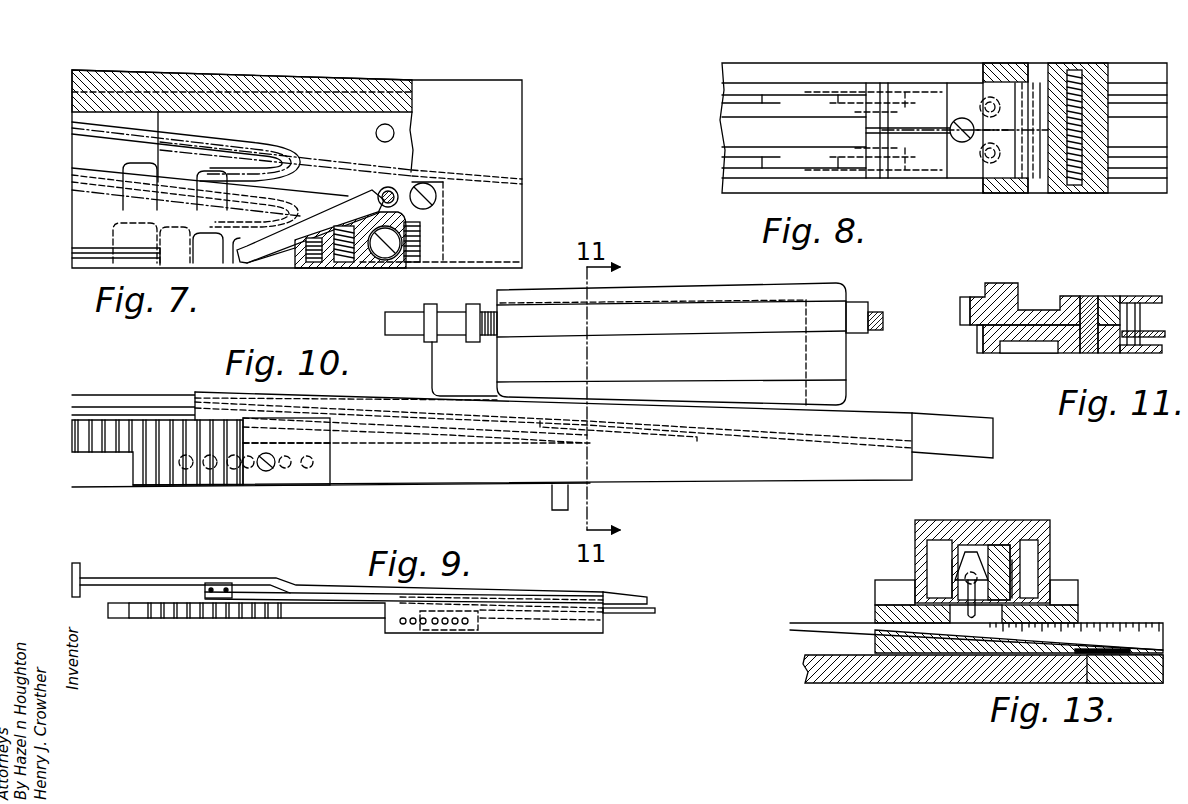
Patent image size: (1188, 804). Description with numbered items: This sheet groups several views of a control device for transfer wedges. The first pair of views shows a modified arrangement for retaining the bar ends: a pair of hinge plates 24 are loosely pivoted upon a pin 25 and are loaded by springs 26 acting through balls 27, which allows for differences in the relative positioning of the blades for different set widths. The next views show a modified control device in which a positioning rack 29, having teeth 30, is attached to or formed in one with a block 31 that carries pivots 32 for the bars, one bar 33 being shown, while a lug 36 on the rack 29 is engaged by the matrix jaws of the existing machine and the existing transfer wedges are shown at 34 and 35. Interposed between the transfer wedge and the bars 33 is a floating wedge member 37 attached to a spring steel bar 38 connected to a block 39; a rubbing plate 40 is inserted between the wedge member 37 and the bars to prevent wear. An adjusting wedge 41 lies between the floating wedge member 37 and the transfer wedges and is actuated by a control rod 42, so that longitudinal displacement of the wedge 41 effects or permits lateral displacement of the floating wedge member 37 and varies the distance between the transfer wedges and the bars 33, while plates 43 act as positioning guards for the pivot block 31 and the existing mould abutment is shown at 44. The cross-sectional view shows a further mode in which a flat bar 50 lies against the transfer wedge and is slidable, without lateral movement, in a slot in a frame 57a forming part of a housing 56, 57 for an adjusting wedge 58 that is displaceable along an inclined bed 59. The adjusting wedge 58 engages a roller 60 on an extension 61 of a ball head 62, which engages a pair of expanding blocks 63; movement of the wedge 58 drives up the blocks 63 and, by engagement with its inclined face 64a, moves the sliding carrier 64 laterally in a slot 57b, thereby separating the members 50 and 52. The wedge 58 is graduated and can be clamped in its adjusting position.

In FIG. 7, the hinge plates 24 is at (247, 259).
In FIG. 8, the hinge plates 24 is at (895, 142).
In FIG. 7, the pin 25 is at (383, 189).
In FIG. 8, the pin 25 is at (1030, 188).
In FIG. 7, the springs 26 is at (345, 263).
In FIG. 8, the springs 26 is at (990, 166).
In FIG. 7, the balls 27 is at (323, 263).
In FIG. 10, the positioning rack 29 is at (82, 446).
In FIG. 9, the positioning rack 29 is at (170, 610).
In FIG. 9, the teeth 30 is at (268, 610).
In FIG. 10, the block 31 is at (178, 470).
In FIG. 9, the block 31 is at (393, 633).
In FIG. 10, the pivots 32 is at (267, 471).
In FIG. 9, the pivots 32 is at (420, 625).
In FIG. 10, the bar 33 is at (432, 470).
In FIG. 9, the bar 33 is at (537, 620).
In FIG. 10, the transfer wedge 34 is at (702, 296).
In FIG. 11, the transfer wedge 34 is at (1002, 290).
In FIG. 10, the transfer wedge 35 is at (443, 368).
In FIG. 11, the transfer wedge 35 is at (1040, 347).
In FIG. 9, the lug 36 is at (138, 610).
In FIG. 10, the floating wedge member 37 is at (700, 440).
In FIG. 11, the floating wedge member 37 is at (1108, 352).
In FIG. 9, the floating wedge member 37 is at (587, 608).
In FIG. 10, the spring steel bar 38 is at (110, 406).
In FIG. 9, the spring steel bar 38 is at (263, 592).
In FIG. 9, the block 39 is at (220, 583).
In FIG. 10, the rubbing plate 40 is at (632, 446).
In FIG. 11, the rubbing plate 40 is at (1110, 300).
In FIG. 9, the rubbing plate 40 is at (636, 613).
In FIG. 10, the adjusting wedge 41 is at (947, 426).
In FIG. 11, the adjusting wedge 41 is at (1089, 300).
In FIG. 9, the adjusting wedge 41 is at (640, 595).
In FIG. 10, the control rod 42 is at (167, 396).
In FIG. 9, the control rod 42 is at (161, 578).
In FIG. 10, the plates 43 is at (778, 468).
In FIG. 11, the plates 43 is at (1155, 296).
In FIG. 10, the mould abutment 44 is at (548, 509).
In FIG. 13, the flat bar 50 is at (905, 522).
In FIG. 13, the third flat bar 52 is at (1007, 547).
In FIG. 13, the housing 56 is at (887, 590).
In FIG. 13, the housing 57 is at (1068, 588).
In FIG. 13, the frame 57a is at (972, 527).
In FIG. 13, the slot 57b is at (1038, 525).
In FIG. 13, the adjusting wedge 58 is at (1148, 636).
In FIG. 13, the inclined bed 59 is at (887, 643).
In FIG. 13, the roller 60 is at (878, 608).
In FIG. 13, the extension 61 is at (930, 590).
In FIG. 13, the ball head 62 is at (963, 575).
In FIG. 13, the expanding blocks 63 is at (945, 580).
In FIG. 13, the sliding carrier 64 is at (1030, 543).
In FIG. 13, the inclined face 64a is at (944, 549).